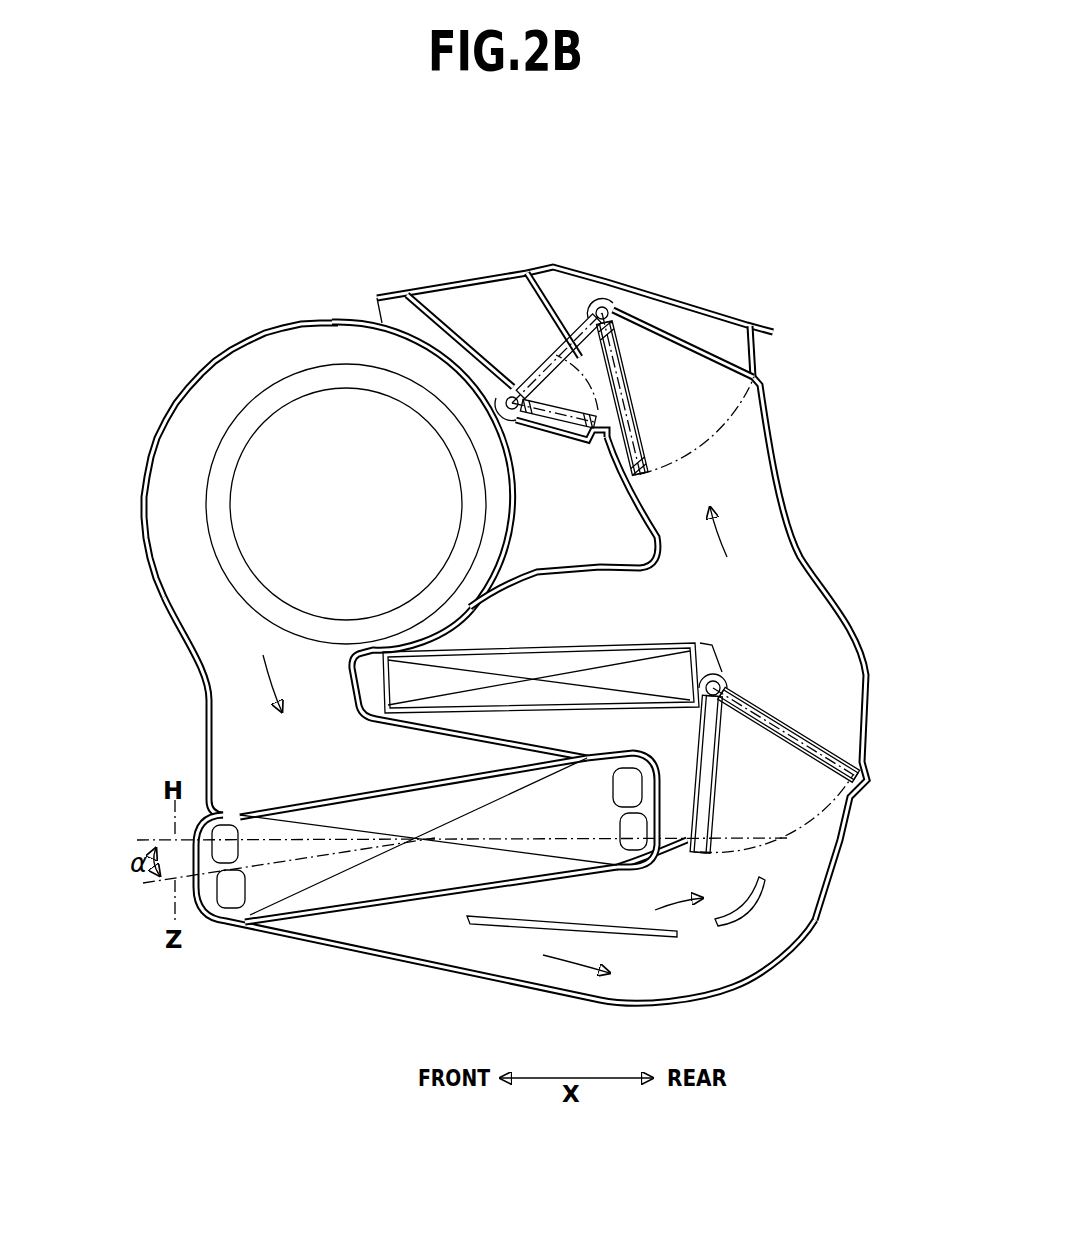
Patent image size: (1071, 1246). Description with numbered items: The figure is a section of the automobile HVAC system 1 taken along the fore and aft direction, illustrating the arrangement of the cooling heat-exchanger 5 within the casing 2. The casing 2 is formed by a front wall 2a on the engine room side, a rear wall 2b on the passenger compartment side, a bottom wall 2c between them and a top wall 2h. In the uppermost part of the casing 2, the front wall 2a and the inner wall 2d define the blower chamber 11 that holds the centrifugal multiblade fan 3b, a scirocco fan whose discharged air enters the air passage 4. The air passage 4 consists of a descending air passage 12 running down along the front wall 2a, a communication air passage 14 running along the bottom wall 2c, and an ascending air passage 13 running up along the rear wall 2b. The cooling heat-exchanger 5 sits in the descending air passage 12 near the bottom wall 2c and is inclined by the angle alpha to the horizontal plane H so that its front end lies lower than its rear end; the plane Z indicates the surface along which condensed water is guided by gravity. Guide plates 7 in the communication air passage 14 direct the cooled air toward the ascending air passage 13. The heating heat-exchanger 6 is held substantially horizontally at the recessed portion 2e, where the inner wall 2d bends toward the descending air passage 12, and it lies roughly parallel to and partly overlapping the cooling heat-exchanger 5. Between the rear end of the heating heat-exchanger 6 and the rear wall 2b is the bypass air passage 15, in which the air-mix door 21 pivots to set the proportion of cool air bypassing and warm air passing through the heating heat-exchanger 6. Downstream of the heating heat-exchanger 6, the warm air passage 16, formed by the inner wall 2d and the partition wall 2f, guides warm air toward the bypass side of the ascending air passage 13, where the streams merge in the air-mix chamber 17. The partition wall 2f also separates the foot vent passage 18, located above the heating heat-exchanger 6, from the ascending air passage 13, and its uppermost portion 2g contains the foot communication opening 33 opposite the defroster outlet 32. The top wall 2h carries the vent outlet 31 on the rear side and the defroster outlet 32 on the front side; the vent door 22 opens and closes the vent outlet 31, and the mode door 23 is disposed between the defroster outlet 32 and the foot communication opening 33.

The HVAC system 1 is at (440, 200).
The casing 2 is at (290, 322).
The front wall 2a is at (188, 605).
The rear wall 2b is at (797, 548).
The bottom wall 2c is at (490, 980).
The inner wall 2d is at (462, 617).
The recessed portion 2e is at (362, 684).
The partition wall 2f is at (623, 574).
The uppermost portion of partition wall 2g is at (604, 440).
The top wall 2h is at (560, 276).
The centrifugal multiblade fan 3b is at (242, 414).
The air passage 4 is at (226, 730).
The cooling heat-exchanger 5 is at (412, 878).
The heating heat-exchanger 6 is at (584, 694).
The guide plates 7 is at (590, 928).
The blower chamber 11 is at (157, 480).
The descending air passage 12 is at (283, 723).
The ascending air passage 13 is at (764, 579).
The communication air passage 14 is at (673, 983).
The bypass air passage 15 is at (818, 668).
The warm air passage 16 is at (595, 623).
The air-mix chamber 17 is at (740, 492).
The foot vent passage 18 is at (582, 532).
The air-mix door 21 is at (717, 775).
The vent door 22 is at (645, 393).
The mode door 23 is at (538, 385).
The vent outlet 31 is at (676, 313).
The defroster outlet 32 is at (466, 300).
The foot communication opening 33 is at (566, 428).